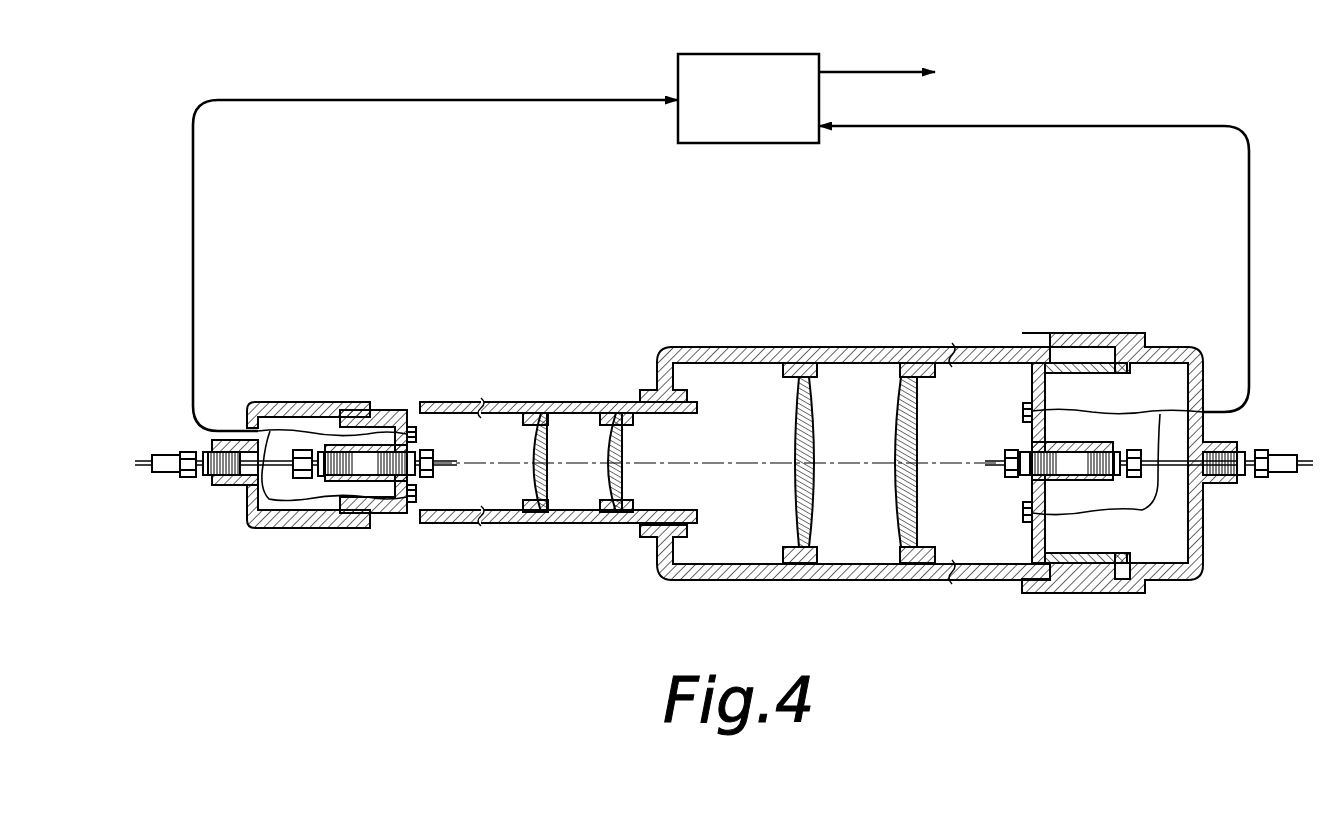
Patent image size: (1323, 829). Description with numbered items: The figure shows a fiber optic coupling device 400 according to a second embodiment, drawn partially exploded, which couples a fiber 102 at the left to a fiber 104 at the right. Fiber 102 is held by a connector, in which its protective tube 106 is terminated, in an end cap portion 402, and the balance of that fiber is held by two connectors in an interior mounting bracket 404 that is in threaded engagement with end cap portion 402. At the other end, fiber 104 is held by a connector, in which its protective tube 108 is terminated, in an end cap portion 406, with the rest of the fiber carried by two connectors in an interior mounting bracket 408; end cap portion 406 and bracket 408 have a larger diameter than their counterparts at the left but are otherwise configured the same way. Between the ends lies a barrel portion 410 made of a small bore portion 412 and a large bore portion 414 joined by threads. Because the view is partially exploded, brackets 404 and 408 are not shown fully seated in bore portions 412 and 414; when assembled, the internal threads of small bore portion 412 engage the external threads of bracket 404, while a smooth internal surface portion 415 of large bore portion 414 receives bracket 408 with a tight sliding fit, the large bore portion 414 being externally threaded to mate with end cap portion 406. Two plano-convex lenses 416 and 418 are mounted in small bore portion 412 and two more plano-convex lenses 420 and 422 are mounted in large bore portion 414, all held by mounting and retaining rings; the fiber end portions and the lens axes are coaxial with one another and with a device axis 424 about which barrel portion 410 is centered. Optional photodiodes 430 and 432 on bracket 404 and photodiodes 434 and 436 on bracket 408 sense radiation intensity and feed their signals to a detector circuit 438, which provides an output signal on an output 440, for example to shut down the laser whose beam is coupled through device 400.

The fiber 102 is at (142, 455).
The fiber 104 is at (986, 462).
The protective tube 106 is at (168, 472).
The protective tube 108 is at (1280, 474).
The coupling device 400 is at (858, 650).
The end cap portion 402 is at (305, 402).
The interior mounting bracket 404 is at (391, 410).
The end cap portion 406 is at (1154, 346).
The interior mounting bracket 408 is at (1032, 540).
The barrel portion 410 is at (841, 452).
The small bore portion 412 is at (577, 523).
The large bore portion 414 is at (860, 348).
The internal surface portion 415 is at (950, 360).
The plano-convex lens 416 is at (545, 440).
The plano-convex lens 418 is at (618, 490).
The plano-convex lens 420 is at (810, 510).
The plano-convex lens 422 is at (898, 424).
The device axis 424 is at (732, 450).
The photodiode 430 is at (418, 432).
The photodiode 432 is at (438, 500).
The photodiode 434 is at (1024, 411).
The photodiode 436 is at (1022, 513).
The detector circuit 438 is at (678, 69).
The output 440 is at (875, 72).